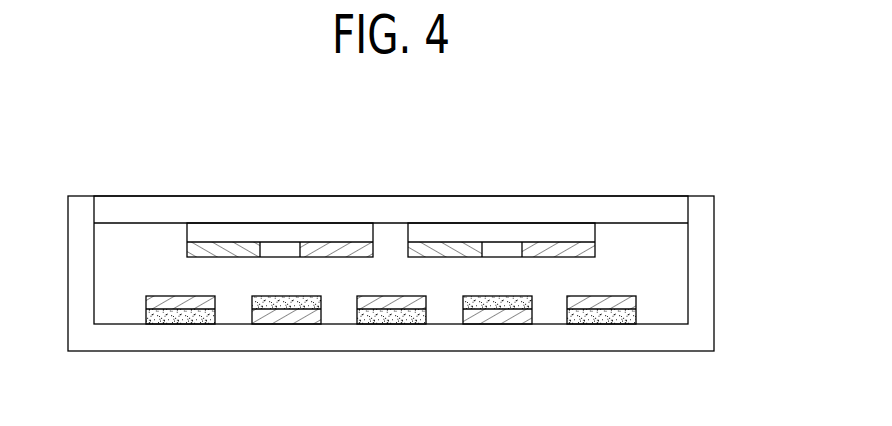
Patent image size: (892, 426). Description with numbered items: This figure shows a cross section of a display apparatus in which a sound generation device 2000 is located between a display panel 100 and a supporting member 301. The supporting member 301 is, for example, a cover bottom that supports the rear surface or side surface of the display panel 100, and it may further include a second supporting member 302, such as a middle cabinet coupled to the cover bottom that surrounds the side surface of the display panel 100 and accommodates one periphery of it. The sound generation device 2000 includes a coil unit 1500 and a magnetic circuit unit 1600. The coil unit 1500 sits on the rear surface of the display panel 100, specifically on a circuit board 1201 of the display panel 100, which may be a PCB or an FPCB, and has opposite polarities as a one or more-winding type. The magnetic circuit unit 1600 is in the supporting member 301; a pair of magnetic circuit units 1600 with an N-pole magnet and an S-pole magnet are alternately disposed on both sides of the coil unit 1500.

The display panel 100 is at (307, 212).
The supporting member 301 is at (703, 340).
The second supporting member 302 is at (703, 270).
The circuit board 1201 is at (550, 232).
The coil unit 1500 is at (227, 250).
The magnetic circuit unit 1600 is at (173, 296).
The sound generation device 2000 is at (255, 143).